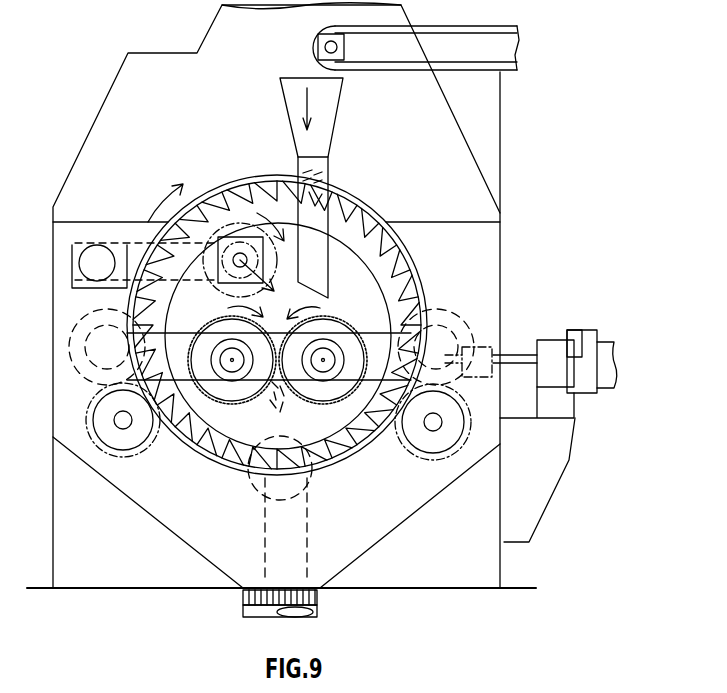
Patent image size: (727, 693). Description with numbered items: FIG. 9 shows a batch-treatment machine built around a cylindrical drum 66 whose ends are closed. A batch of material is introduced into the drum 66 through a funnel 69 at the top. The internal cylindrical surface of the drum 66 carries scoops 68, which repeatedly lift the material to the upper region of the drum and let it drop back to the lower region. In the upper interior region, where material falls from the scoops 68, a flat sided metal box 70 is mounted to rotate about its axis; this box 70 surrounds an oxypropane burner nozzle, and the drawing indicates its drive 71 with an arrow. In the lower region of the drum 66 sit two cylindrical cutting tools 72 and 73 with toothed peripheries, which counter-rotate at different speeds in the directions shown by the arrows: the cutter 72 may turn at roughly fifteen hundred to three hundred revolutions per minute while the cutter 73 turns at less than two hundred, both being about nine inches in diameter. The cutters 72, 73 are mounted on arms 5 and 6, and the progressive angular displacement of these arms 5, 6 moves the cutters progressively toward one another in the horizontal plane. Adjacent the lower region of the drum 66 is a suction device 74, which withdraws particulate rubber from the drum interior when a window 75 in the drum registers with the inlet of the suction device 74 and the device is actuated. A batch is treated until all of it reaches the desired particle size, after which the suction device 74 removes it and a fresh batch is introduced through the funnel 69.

The arm 5 is at (200, 455).
The arm 6 is at (357, 445).
The cylindrical drum 66 is at (403, 238).
The scoops 68 is at (378, 224).
The funnel 69 is at (330, 165).
The flat sided metal box 70 is at (217, 281).
The drive shaft 71 is at (269, 285).
The cylindrical cutting tool 72 is at (212, 322).
The cylindrical cutting tool 73 is at (342, 322).
The suction device 74 is at (302, 568).
The window 75 is at (287, 437).